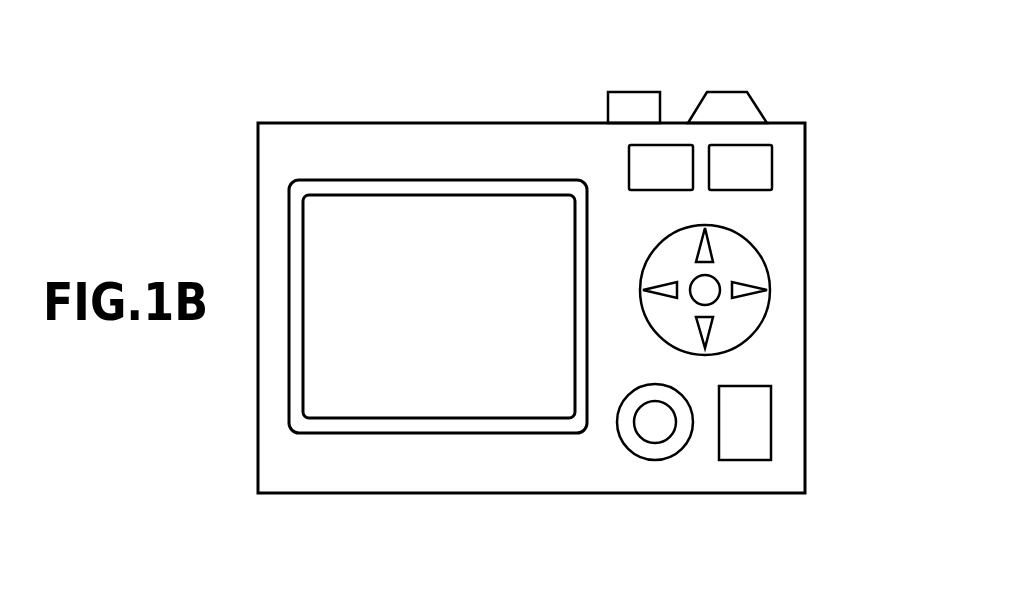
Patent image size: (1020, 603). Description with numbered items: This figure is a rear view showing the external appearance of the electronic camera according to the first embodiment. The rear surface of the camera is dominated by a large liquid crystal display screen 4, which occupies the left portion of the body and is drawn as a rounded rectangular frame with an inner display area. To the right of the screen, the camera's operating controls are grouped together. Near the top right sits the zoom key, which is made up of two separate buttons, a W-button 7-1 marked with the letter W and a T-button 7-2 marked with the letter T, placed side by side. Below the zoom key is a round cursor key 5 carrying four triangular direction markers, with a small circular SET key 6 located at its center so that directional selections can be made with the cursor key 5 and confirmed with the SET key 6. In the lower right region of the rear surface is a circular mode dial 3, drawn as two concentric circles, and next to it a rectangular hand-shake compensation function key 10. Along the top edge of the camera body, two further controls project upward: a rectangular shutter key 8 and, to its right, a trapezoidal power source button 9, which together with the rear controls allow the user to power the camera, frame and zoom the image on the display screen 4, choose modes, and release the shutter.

The mode dial 3 is at (655, 460).
The liquid crystal display screen 4 is at (395, 390).
The cursor key 5 is at (767, 267).
The SET key 6 is at (708, 310).
The W-button 7-1 is at (679, 190).
The T-button 7-2 is at (772, 160).
The shutter key 8 is at (634, 92).
The power source button 9 is at (725, 92).
The hand-shake compensation function key 10 is at (771, 420).